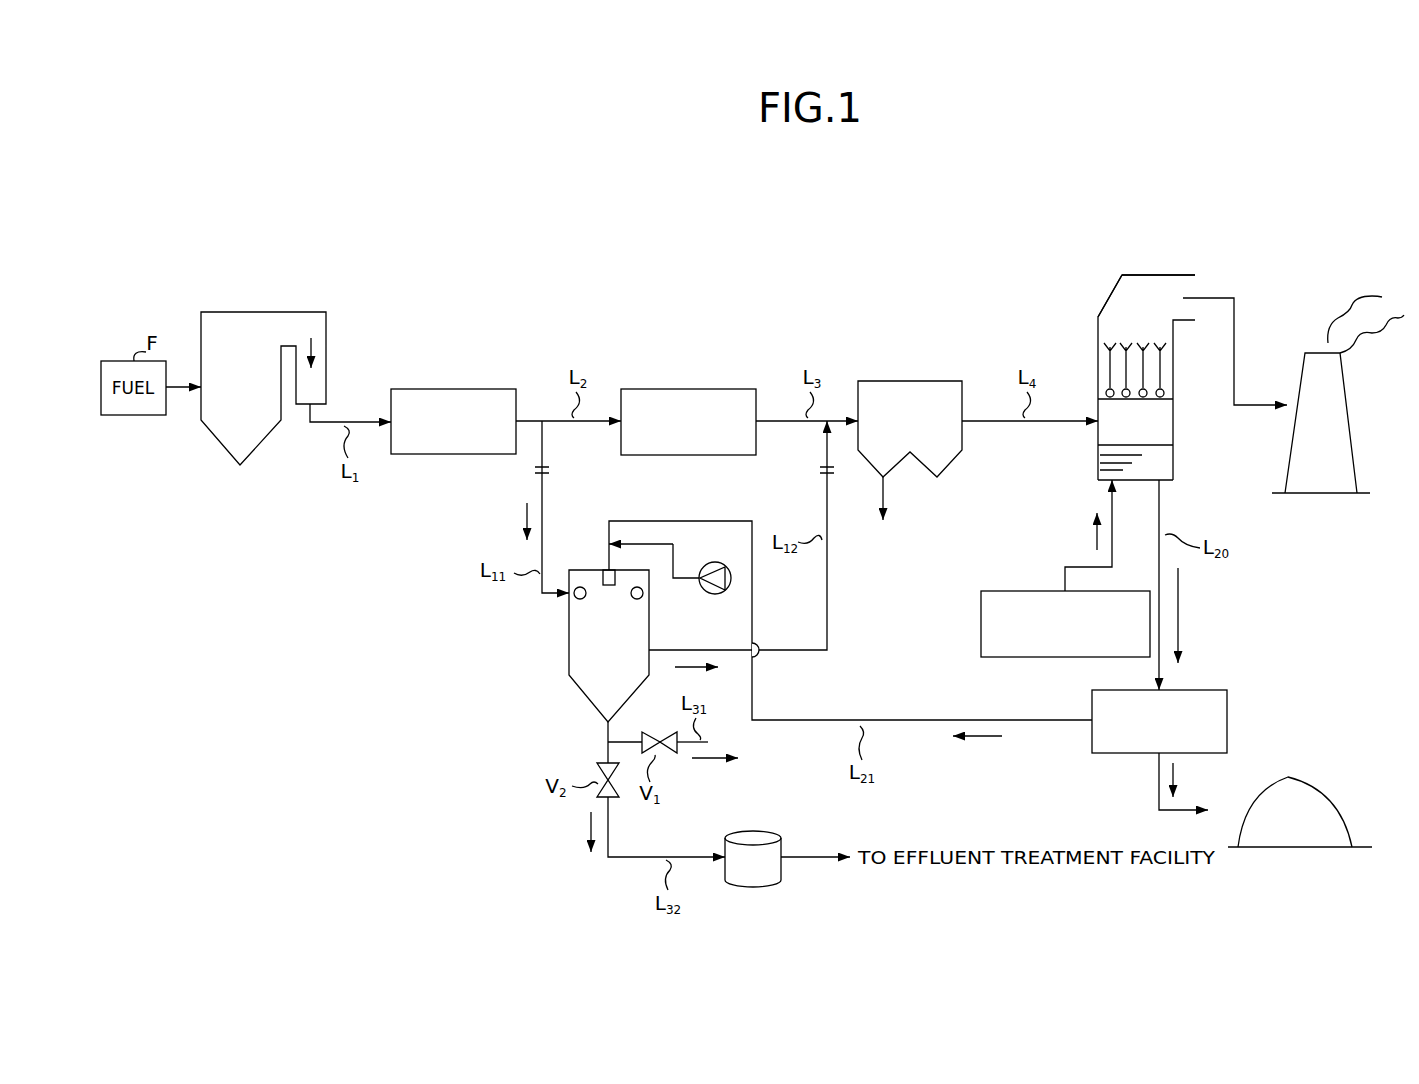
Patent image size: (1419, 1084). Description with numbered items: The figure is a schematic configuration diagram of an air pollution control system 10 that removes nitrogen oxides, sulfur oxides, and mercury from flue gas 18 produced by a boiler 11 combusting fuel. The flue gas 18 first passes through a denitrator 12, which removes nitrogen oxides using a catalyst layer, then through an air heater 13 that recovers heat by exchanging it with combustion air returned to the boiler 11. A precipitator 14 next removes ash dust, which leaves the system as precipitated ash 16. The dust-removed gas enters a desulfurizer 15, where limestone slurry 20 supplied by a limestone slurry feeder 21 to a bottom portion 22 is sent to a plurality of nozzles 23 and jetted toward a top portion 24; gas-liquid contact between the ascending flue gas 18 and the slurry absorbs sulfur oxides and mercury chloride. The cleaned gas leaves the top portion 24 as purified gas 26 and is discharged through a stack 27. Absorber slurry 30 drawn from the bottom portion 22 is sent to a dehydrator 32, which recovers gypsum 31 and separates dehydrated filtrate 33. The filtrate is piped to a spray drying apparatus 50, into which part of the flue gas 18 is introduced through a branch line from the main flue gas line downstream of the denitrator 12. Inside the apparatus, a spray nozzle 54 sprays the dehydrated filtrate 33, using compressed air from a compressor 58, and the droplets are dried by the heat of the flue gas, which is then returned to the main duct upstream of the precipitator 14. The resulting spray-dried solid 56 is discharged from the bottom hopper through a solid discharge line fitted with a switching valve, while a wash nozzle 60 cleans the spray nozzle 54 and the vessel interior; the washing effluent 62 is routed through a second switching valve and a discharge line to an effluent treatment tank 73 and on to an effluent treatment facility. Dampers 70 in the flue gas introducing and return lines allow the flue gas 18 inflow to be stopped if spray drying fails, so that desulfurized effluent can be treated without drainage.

The air pollution control system 10 is at (670, 234).
The boiler 11 is at (228, 312).
The denitrator 12 is at (446, 389).
The air heater 13 is at (722, 389).
The precipitator 14 is at (910, 381).
The desulfurizer 15 is at (1160, 273).
The precipitated ash 16 is at (895, 508).
The flue gas 18 is at (318, 358).
The limestone slurry 20 is at (1173, 483).
The limestone slurry feeder 21 is at (1030, 658).
The bottom portion 22 is at (1175, 462).
The nozzles 23 is at (1170, 393).
The top portion 24 is at (1112, 290).
The purified gas 26 is at (1237, 340).
The stack 27 is at (1358, 425).
The absorber slurry 30 is at (1182, 608).
The gypsum 31 is at (1178, 782).
The dehydrator 32 is at (1230, 720).
The dehydrated filtrate 33 is at (978, 745).
The spray drying apparatus 50 is at (560, 658).
The spray nozzle 54 is at (605, 572).
The spray-dried solid 56 is at (706, 764).
The compressor 58 is at (723, 596).
The wash nozzle 60 is at (575, 598).
The washing effluent 62 is at (588, 830).
The dampers 70 is at (530, 470).
The effluent treatment tank 73 is at (754, 831).